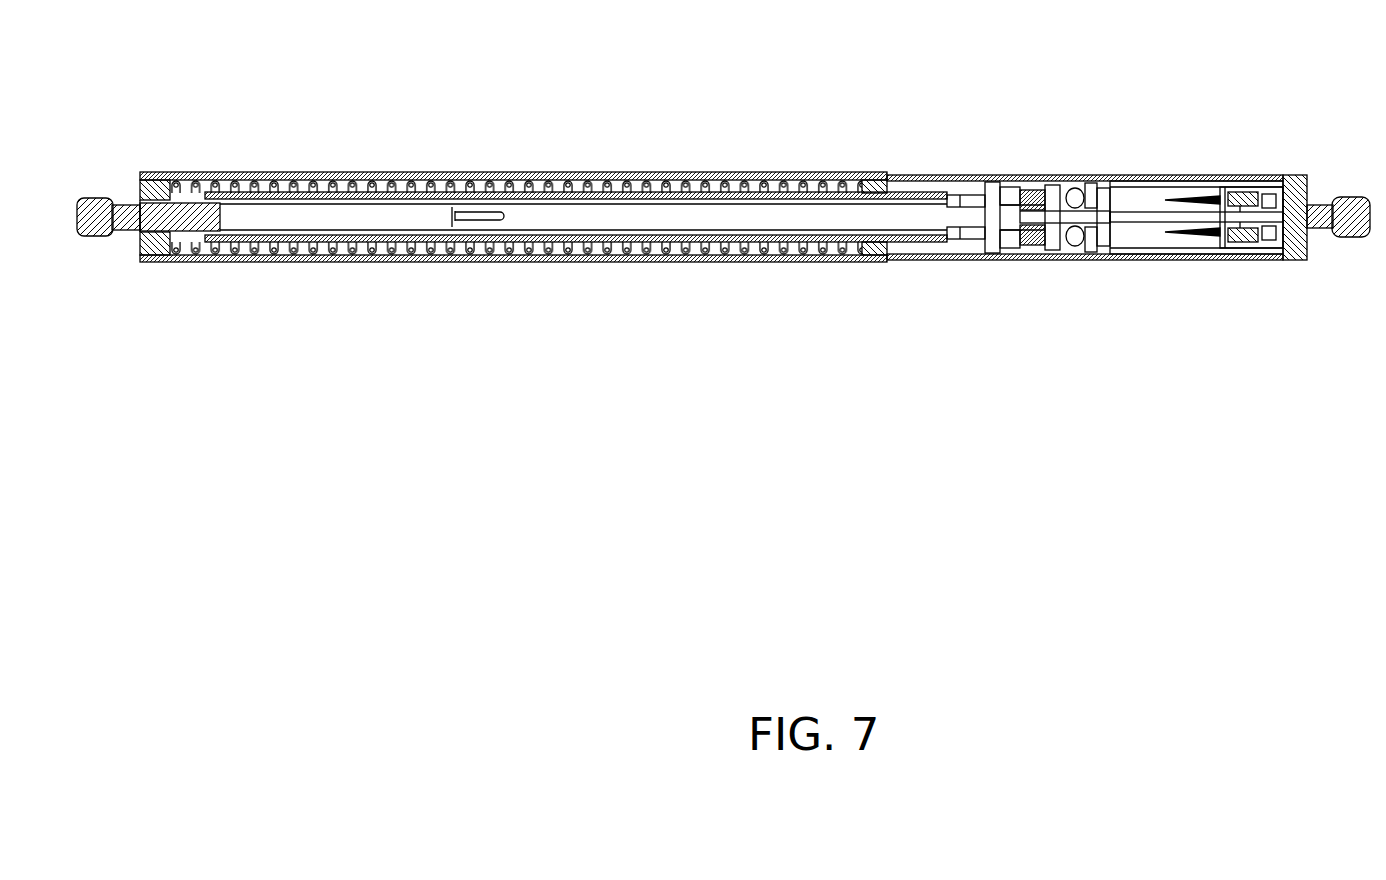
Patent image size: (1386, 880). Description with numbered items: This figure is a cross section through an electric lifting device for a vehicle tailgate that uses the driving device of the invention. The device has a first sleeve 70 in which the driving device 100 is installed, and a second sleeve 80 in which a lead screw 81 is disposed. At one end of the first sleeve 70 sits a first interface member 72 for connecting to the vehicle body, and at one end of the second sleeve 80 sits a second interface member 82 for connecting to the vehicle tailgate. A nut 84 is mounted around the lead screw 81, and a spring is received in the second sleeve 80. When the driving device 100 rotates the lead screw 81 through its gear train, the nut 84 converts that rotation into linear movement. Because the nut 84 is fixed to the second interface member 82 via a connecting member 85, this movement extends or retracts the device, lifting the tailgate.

The second sleeve 80 is at (345, 265).
The lead screw 81 is at (745, 218).
The second interface member 82 is at (123, 205).
The nut 84 is at (675, 191).
The connecting member 85 is at (553, 191).
The driving device 100 is at (1055, 163).
The first sleeve 70 is at (1170, 175).
The first interface member 72 is at (1292, 178).